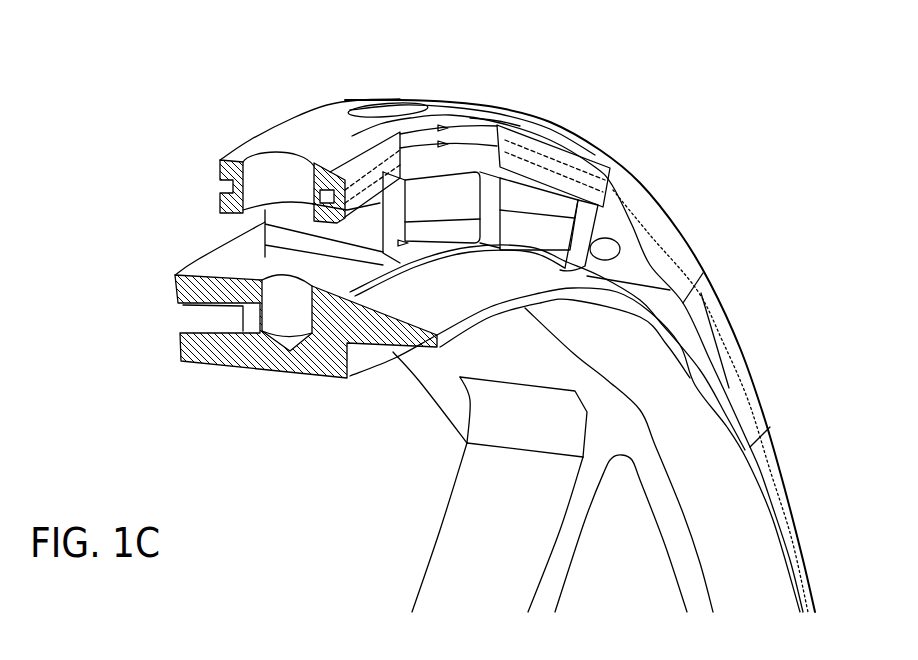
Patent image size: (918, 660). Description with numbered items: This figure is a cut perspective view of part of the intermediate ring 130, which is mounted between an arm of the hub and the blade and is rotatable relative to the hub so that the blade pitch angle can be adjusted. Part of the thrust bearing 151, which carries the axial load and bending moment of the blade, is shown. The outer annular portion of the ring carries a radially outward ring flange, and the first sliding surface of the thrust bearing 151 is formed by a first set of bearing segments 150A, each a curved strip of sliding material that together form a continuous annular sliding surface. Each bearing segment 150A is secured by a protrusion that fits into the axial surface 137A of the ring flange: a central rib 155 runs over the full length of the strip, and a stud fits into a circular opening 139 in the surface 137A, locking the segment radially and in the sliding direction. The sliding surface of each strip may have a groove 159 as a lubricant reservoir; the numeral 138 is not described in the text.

The intermediate ring 130 is at (157, 384).
The axial surface of the ring flange 137A is at (495, 116).
The rim bead 138 is at (440, 116).
The circular opening 139 is at (470, 130).
The bearing segment 150A is at (690, 253).
The thrust bearing 151 is at (650, 208).
The central rib 155 is at (313, 210).
The groove 159 is at (357, 168).